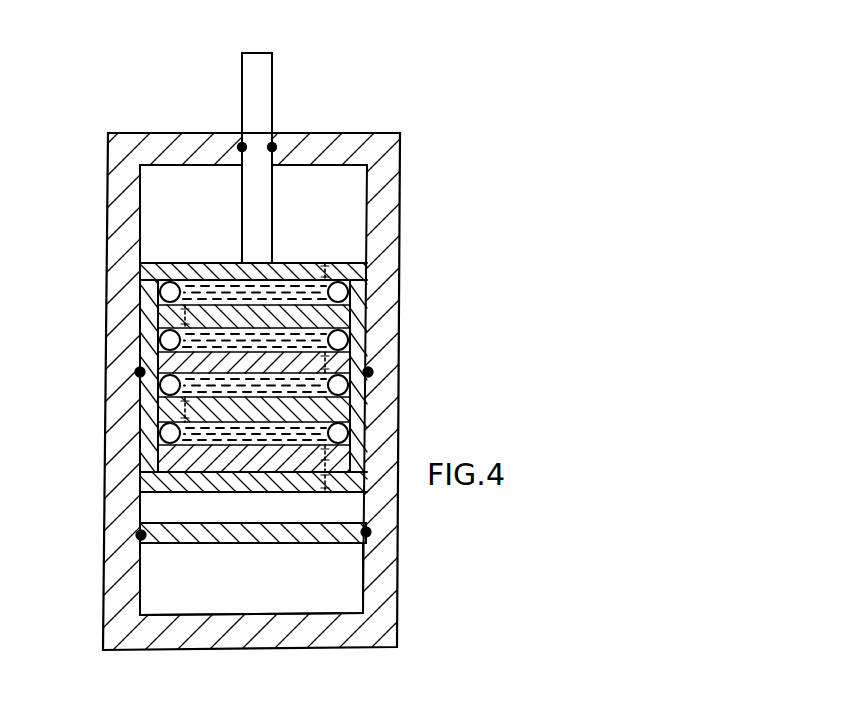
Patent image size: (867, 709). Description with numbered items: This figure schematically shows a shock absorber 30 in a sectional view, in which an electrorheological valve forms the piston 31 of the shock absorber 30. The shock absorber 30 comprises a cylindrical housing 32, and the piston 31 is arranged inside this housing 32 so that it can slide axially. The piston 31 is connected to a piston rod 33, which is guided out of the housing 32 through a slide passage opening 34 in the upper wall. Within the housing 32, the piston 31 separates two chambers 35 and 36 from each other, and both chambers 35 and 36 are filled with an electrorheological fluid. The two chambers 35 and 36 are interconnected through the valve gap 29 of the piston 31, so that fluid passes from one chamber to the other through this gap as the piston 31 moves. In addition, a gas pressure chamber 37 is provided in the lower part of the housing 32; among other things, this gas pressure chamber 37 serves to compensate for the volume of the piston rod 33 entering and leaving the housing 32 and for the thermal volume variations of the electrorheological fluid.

The valve gap 29 is at (190, 403).
The shock absorber 30 is at (317, 373).
The piston 31 is at (368, 372).
The cylindrical housing 32 is at (122, 199).
The piston rod 33 is at (247, 202).
The slide passage opening 34 is at (274, 136).
The chamber 35 is at (344, 190).
The chamber 36 is at (160, 510).
The gas pressure chamber 37 is at (317, 590).